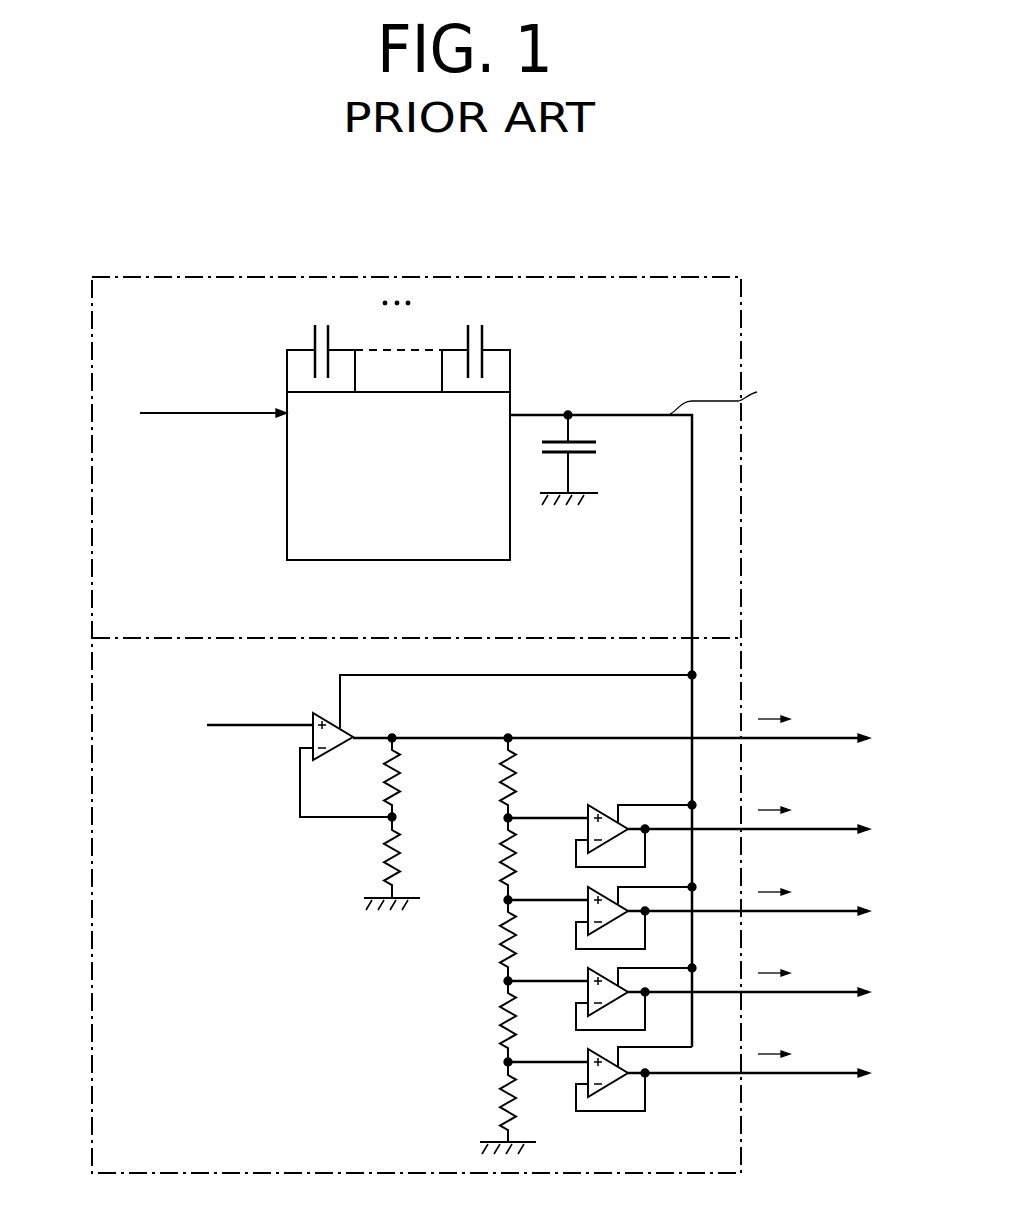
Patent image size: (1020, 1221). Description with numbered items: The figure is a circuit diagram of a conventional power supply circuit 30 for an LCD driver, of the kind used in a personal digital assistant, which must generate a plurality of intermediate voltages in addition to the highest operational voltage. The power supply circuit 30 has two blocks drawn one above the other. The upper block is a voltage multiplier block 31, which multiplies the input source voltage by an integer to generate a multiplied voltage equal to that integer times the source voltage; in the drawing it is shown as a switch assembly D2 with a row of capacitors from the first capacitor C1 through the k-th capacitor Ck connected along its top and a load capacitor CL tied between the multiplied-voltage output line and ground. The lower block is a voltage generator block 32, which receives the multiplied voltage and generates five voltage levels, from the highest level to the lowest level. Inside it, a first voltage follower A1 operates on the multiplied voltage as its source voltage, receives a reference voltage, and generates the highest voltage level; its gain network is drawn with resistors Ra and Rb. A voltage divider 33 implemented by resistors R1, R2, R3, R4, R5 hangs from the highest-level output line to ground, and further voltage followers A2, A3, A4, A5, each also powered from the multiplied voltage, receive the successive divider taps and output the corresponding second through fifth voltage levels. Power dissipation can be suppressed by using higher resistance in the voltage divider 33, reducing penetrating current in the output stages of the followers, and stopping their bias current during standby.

The power supply circuit 30 is at (866, 237).
The voltage multiplier block 31 is at (590, 277).
The voltage generator block 32 is at (764, 659).
The voltage divider 33 is at (537, 785).
The switch assembly D2 is at (287, 505).
The boosting capacitor C1 is at (321, 339).
The boosting capacitor Ck is at (476, 339).
The load capacitor CL is at (592, 460).
The voltage follower A1 is at (451, 744).
The voltage follower A2 is at (602, 834).
The voltage follower A3 is at (602, 916).
The voltage follower A4 is at (602, 997).
The voltage follower A5 is at (600, 1079).
The feedback resistor Ra is at (366, 777).
The feedback resistor Rb is at (376, 863).
The resistor R1 is at (483, 778).
The resistor R2 is at (483, 859).
The resistor R3 is at (483, 940).
The resistor R4 is at (483, 1021).
The resistor R5 is at (493, 1108).